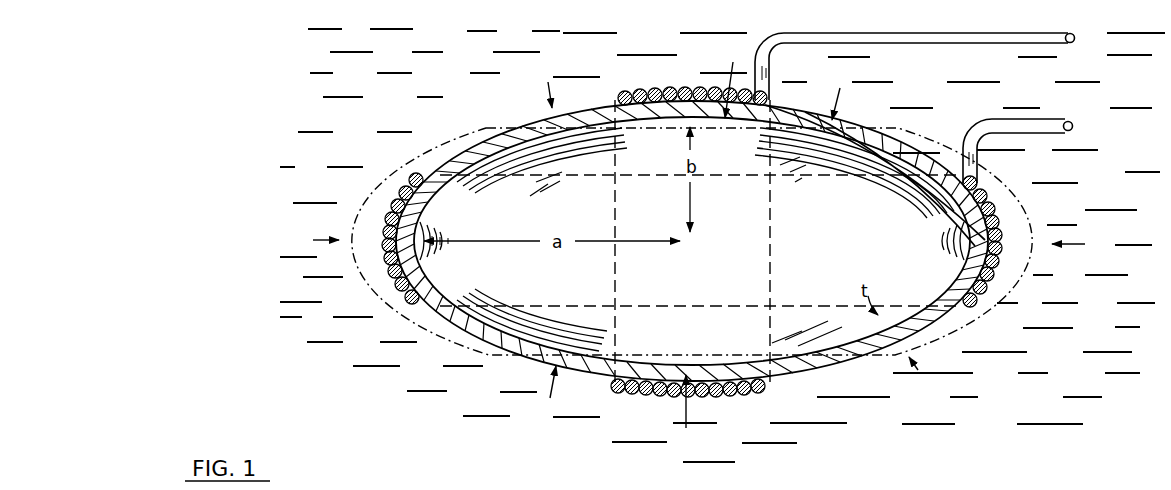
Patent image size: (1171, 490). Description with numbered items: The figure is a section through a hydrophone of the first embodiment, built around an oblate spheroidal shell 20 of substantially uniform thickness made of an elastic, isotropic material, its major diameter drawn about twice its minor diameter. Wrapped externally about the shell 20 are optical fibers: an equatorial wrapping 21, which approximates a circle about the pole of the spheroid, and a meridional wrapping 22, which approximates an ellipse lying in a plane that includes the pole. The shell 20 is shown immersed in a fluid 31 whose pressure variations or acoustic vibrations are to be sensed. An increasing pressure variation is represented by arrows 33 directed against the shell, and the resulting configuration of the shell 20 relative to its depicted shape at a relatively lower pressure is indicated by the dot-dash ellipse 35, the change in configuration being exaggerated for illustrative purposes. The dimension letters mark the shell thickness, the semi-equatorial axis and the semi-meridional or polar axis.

The oblate spheroidal shell 20 is at (572, 92).
The equatorial wrapping 21 is at (1003, 228).
The meridional wrapping 22 is at (677, 84).
The fluid 31 is at (331, 377).
The arrows 33 is at (547, 104).
The dot-dash ellipse 35 is at (378, 183).